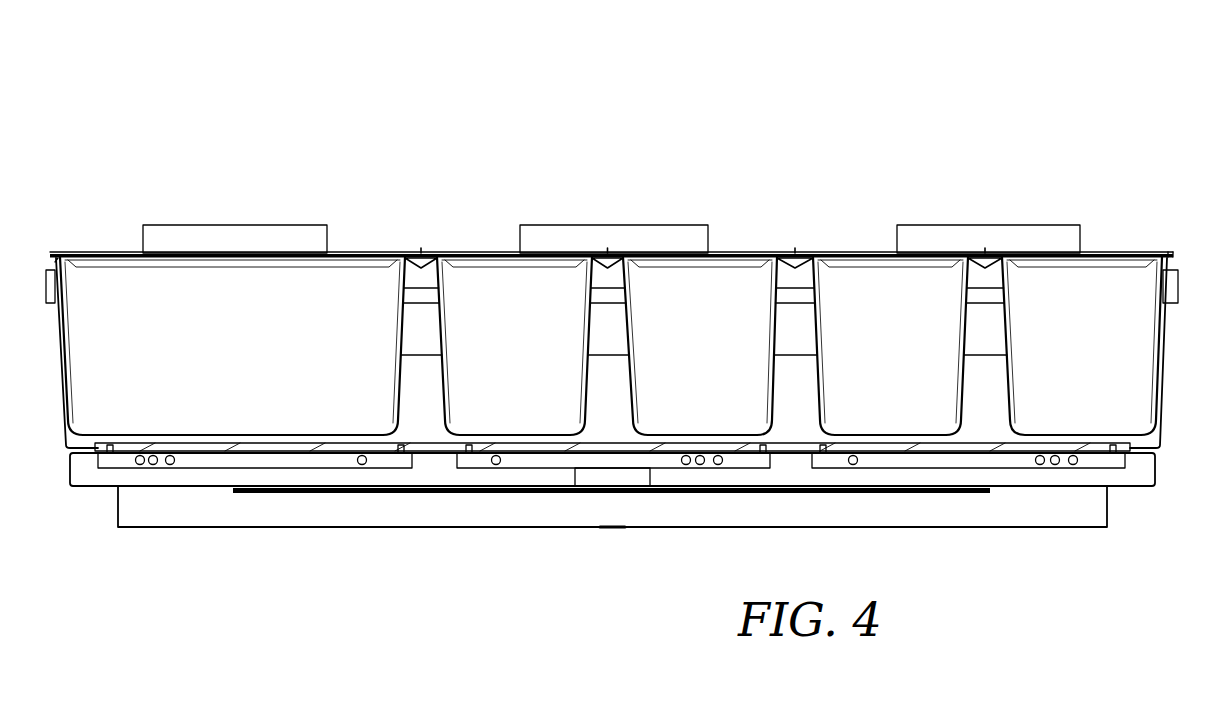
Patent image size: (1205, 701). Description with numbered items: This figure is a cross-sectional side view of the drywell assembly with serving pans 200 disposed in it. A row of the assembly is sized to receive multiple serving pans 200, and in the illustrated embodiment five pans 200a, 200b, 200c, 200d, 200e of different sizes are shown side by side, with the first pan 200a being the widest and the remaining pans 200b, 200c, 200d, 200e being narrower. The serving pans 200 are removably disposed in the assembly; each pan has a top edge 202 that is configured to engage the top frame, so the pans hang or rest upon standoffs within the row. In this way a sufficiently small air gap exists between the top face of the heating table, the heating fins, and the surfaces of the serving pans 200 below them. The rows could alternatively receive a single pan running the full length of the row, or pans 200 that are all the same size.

The serving pans 200 is at (556, 138).
The top edge 202 is at (352, 263).
The first serving pan 200a is at (200, 371).
The second serving pan 200b is at (491, 371).
The third serving pan 200c is at (681, 371).
The fourth serving pan 200d is at (862, 371).
The fifth serving pan 200e is at (1062, 371).